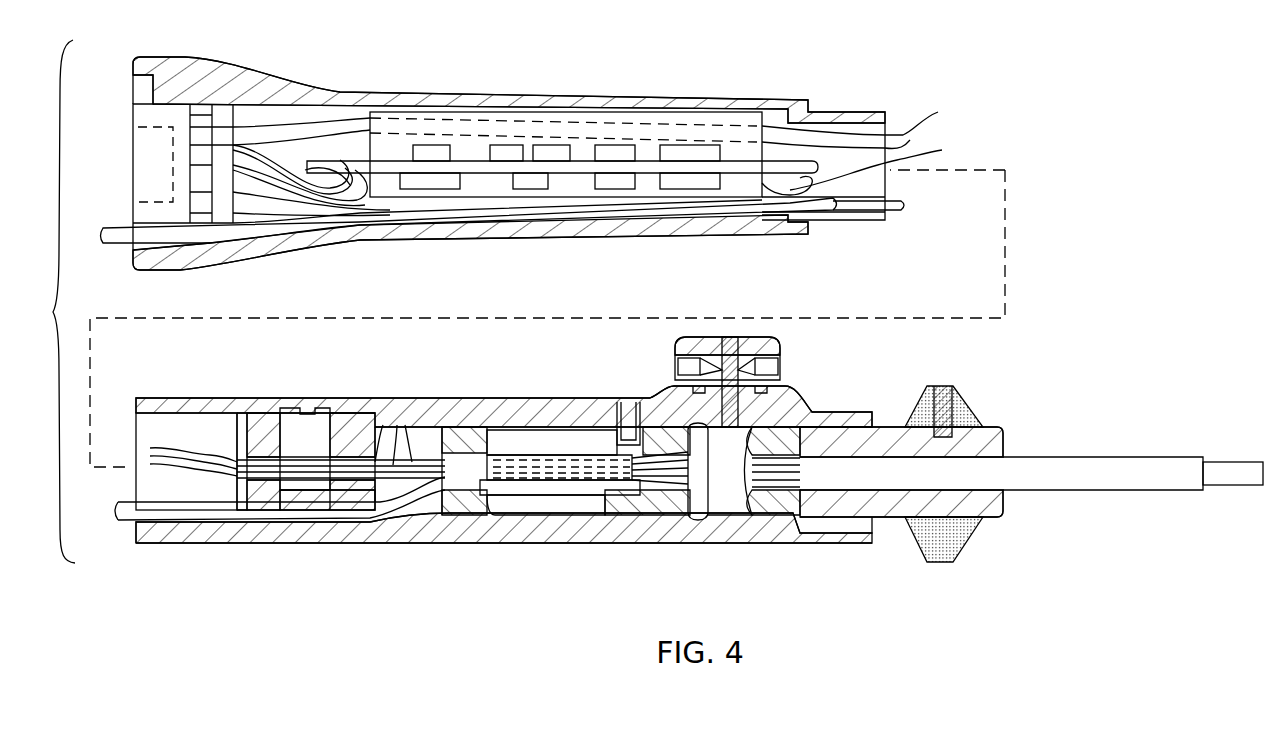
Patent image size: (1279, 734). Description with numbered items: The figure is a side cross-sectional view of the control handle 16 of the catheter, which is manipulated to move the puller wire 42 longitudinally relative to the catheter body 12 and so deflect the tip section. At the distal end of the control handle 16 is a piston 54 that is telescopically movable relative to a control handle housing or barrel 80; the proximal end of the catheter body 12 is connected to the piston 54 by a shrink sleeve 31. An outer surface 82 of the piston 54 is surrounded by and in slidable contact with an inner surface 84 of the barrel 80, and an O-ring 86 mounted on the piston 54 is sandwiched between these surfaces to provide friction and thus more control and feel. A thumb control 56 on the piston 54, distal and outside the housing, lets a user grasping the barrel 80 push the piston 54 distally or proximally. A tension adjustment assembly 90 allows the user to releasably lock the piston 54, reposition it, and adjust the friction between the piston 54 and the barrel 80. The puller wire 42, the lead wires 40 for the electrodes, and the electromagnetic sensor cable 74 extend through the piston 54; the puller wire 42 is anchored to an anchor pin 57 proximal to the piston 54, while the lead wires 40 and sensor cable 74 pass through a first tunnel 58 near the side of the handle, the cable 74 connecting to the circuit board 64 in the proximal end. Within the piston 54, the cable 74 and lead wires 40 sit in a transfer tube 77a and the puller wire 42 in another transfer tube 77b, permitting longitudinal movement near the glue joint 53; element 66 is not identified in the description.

The catheter body 12 is at (1228, 473).
The control handle 16 is at (509, 163).
The shrink sleeve 31 is at (1114, 470).
The lead wires 40 is at (383, 452).
The puller wire 42 is at (447, 430).
The glue joint 53 is at (570, 490).
The piston 54 is at (888, 440).
The thumb control 56 is at (957, 406).
The anchor pin 57 is at (305, 425).
The first tunnel 58 is at (248, 432).
The circuit board 64 is at (404, 135).
The cable 66 is at (897, 213).
The electromagnetic sensor cable 74 is at (408, 455).
The transfer tube 77a is at (540, 460).
The transfer tube 77b is at (598, 460).
The barrel 80 is at (622, 537).
The outer surface 82 is at (733, 508).
The inner surface 84 is at (783, 503).
The O-ring 86 is at (698, 512).
The tension adjustment assembly 90 is at (806, 334).